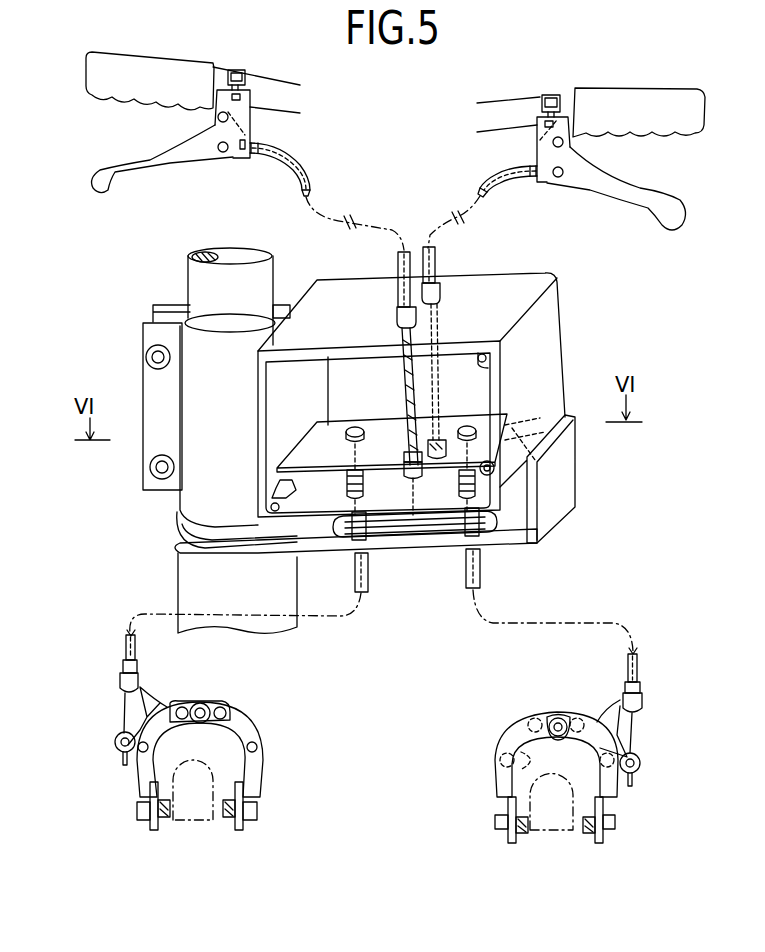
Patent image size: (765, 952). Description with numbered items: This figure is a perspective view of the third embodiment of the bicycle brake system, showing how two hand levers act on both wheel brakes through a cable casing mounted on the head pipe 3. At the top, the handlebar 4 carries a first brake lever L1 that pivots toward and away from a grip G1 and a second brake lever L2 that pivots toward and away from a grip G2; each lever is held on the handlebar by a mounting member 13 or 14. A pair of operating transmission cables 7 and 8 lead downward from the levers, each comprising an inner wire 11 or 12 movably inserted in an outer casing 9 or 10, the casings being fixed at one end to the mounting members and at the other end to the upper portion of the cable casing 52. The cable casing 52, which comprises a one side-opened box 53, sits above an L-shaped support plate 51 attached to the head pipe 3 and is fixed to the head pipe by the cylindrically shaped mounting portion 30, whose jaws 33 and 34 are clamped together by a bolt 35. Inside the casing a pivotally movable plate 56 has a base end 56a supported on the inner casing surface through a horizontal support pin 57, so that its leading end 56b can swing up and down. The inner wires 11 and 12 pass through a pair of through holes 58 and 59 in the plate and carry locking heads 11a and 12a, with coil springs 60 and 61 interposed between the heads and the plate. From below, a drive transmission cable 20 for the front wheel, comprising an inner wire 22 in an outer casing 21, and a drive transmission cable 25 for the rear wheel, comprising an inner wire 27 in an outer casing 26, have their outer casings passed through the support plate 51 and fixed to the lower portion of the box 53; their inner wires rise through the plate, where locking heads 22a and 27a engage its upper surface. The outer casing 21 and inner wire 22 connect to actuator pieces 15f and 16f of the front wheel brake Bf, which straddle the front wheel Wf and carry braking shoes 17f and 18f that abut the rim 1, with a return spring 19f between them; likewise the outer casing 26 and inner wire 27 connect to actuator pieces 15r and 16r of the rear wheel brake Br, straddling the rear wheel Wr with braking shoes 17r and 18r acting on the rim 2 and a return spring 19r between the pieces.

The grip G1 is at (145, 62).
The grip G2 is at (627, 98).
The handlebar 4 is at (277, 88).
The mounting member 13 is at (243, 122).
The mounting member 14 is at (537, 142).
The first brake lever L1 is at (118, 170).
The second brake lever L2 is at (637, 196).
The operating transmission cable 7 is at (327, 196).
The outer casing 9 is at (300, 162).
The inner wire 11 is at (353, 213).
The operating transmission cable 8 is at (467, 247).
The outer casing 10 is at (437, 264).
The inner wire 12 is at (430, 248).
The mounting portion 30 is at (200, 488).
The jaw 33 is at (150, 390).
The jaw 34 is at (165, 305).
The bolt 35 is at (150, 357).
The cable casing 52 is at (453, 395).
The box 53 is at (552, 303).
The pivotally movable plate 56 is at (323, 470).
The base end 56a is at (560, 415).
The leading end 56b is at (300, 443).
The horizontal support pin 57 is at (493, 470).
The through hole 58 is at (440, 428).
The through hole 59 is at (404, 455).
The coil spring 60 is at (406, 472).
The coil spring 61 is at (413, 425).
The locking head 11a is at (422, 476).
The locking head 12a is at (448, 436).
The locking head 27a is at (355, 428).
The locking head 22a is at (472, 428).
The support plate 51 is at (415, 550).
The head pipe 3 is at (178, 578).
The drive transmission cable 25 is at (203, 679).
The outer casing 26 is at (125, 652).
The inner wire 27 is at (127, 632).
The drive transmission cable 20 is at (595, 688).
The outer casing 21 is at (638, 667).
The inner wire 22 is at (636, 650).
The rear wheel brake Br is at (201, 788).
The return spring 19r is at (237, 723).
The actuator piece 15r is at (143, 778).
The actuator piece 16r is at (257, 777).
The braking shoe 17r is at (165, 820).
The braking shoe 18r is at (222, 820).
The rim 2 is at (213, 777).
The rear wheel Wr is at (198, 823).
The front wheel brake Bf is at (556, 788).
The return spring 19f is at (518, 728).
The actuator piece 15f is at (610, 797).
The actuator piece 16f is at (500, 783).
The braking shoe 17f is at (600, 838).
The braking shoe 18f is at (522, 833).
The rim 1 is at (577, 792).
The front wheel Wf is at (560, 840).